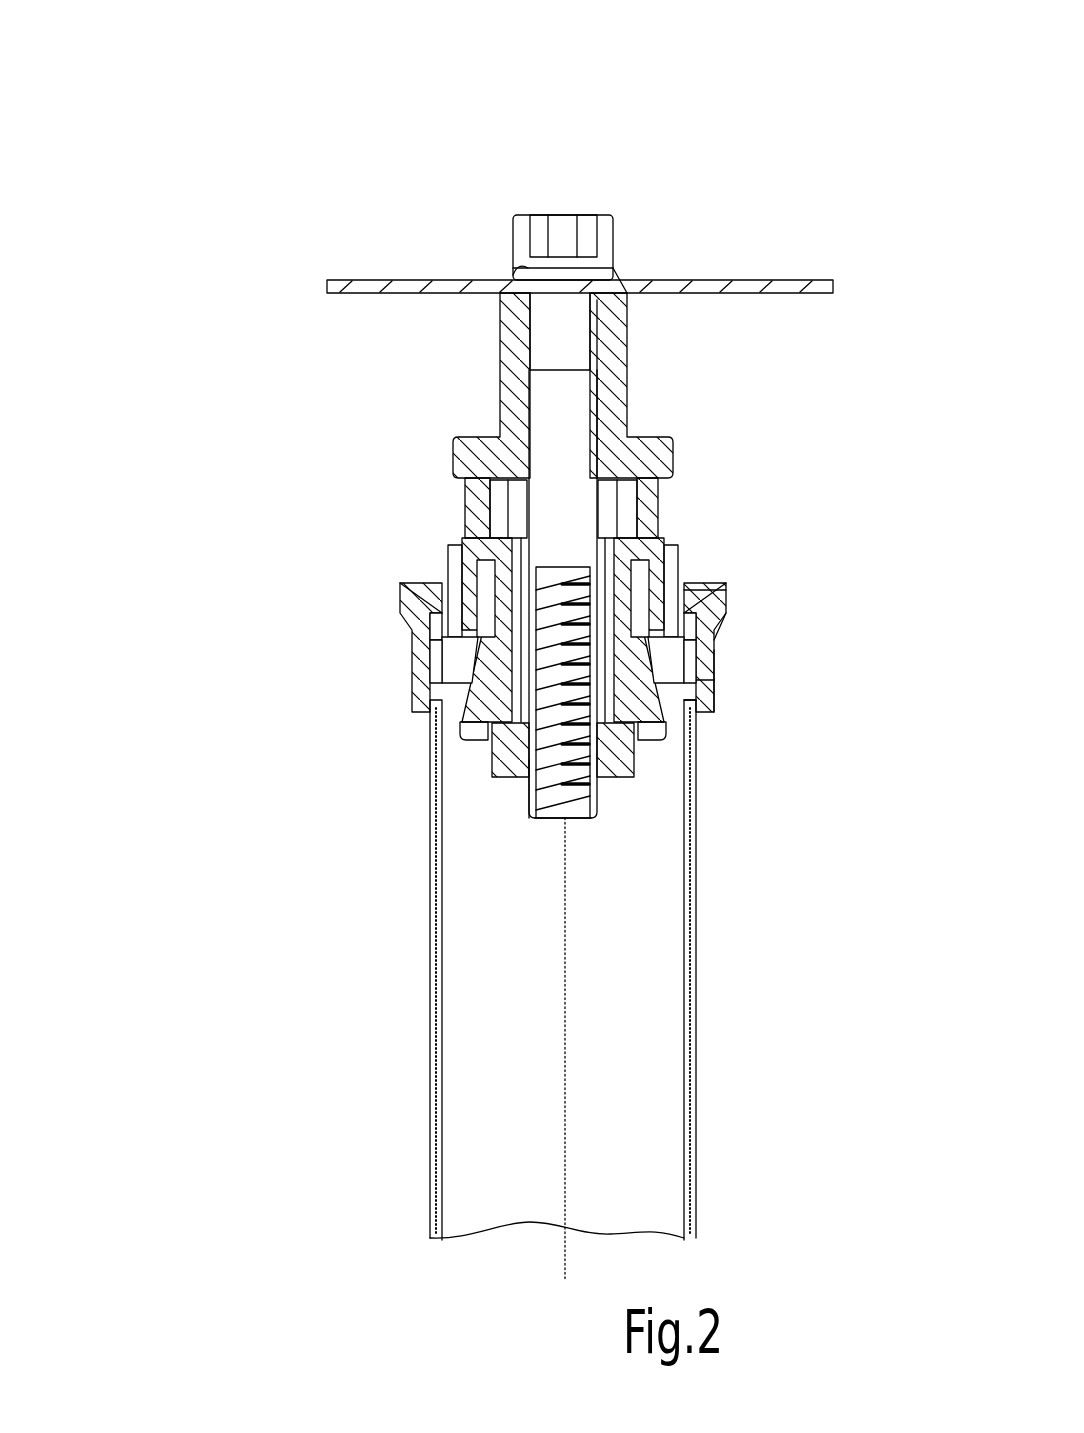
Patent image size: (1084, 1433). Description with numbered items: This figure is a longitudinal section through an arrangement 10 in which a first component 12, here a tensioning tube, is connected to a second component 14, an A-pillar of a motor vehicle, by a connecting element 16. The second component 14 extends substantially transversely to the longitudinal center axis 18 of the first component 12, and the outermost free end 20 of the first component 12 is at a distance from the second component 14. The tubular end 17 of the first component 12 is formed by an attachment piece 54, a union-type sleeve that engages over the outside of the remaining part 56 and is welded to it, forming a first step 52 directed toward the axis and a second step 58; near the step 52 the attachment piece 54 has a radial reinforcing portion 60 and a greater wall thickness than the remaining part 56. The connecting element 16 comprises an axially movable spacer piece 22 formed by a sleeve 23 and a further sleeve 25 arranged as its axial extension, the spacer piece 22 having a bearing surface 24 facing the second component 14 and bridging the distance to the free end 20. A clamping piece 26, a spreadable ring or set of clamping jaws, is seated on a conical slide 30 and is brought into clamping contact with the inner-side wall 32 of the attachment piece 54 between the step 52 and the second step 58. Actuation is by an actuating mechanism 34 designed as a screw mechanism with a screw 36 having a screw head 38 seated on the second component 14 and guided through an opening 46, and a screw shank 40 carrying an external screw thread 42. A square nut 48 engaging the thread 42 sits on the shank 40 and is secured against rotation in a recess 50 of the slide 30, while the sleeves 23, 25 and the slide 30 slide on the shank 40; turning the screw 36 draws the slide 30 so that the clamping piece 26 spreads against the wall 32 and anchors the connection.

The arrangement 10 is at (242, 202).
The first component 12 is at (512, 985).
The second component 14 is at (345, 279).
The connecting element 16 is at (386, 486).
The end 17 is at (369, 678).
The longitudinal center axis 18 is at (563, 1263).
The outermost free end 20 is at (402, 584).
The spacer piece 22 is at (655, 425).
The sleeve 23 is at (608, 368).
The bearing surface 24 is at (625, 290).
The sleeve 25 is at (660, 491).
The clamping piece 26 is at (723, 640).
The conical slide 30 is at (486, 657).
The inner-side wall 32 is at (717, 650).
The actuating mechanism 34 is at (492, 222).
The screw 36 is at (557, 317).
The screw head 38 is at (545, 214).
The screw shank 40 is at (592, 776).
The external screw thread 42 is at (535, 778).
The opening 46 is at (538, 292).
The nut 48 is at (645, 760).
The recess 50 is at (481, 741).
The step 52 is at (717, 640).
The attachment piece 54 is at (425, 652).
The remaining part 56 is at (700, 725).
The second step 58 is at (717, 682).
The reinforcing portion 60 is at (698, 593).